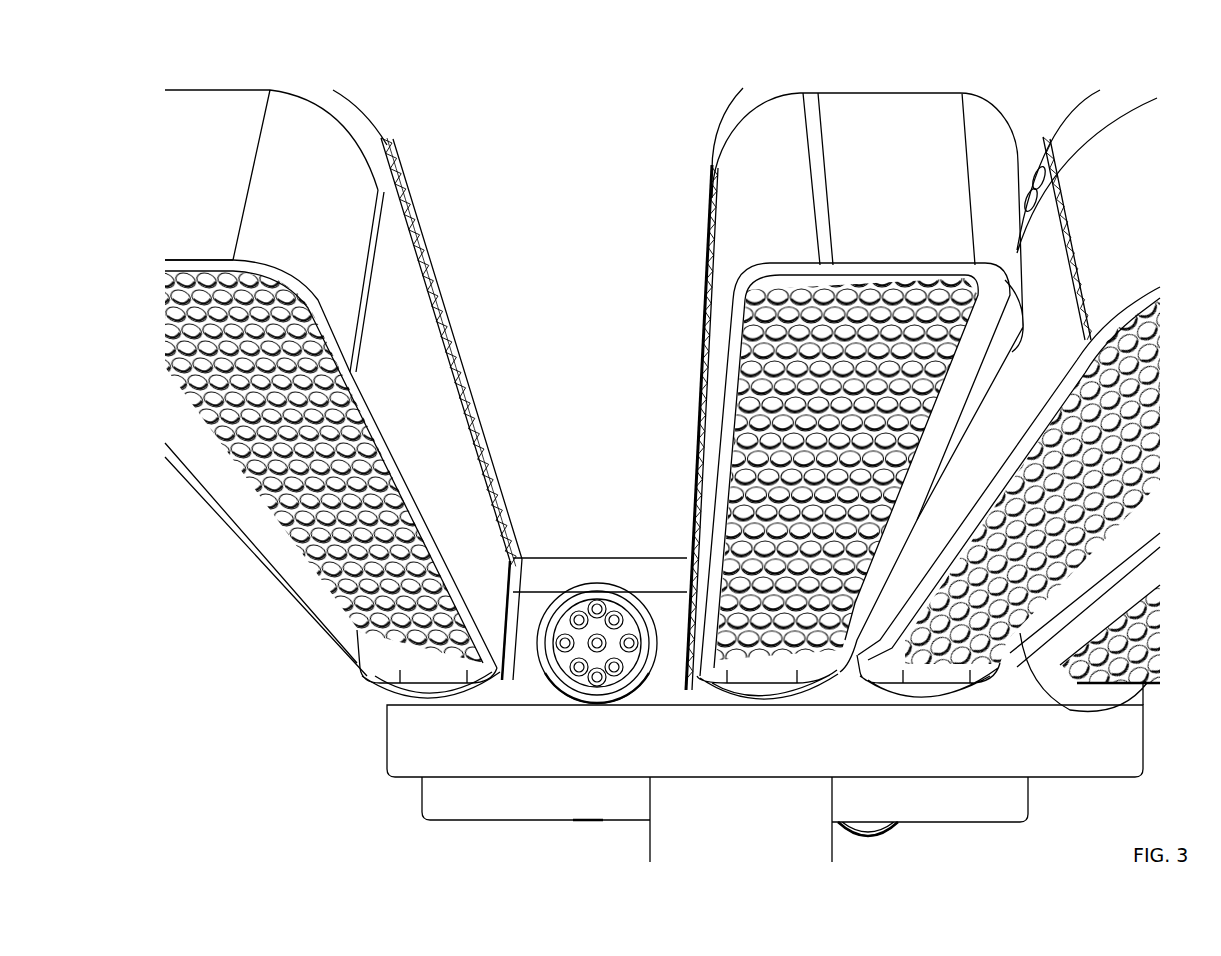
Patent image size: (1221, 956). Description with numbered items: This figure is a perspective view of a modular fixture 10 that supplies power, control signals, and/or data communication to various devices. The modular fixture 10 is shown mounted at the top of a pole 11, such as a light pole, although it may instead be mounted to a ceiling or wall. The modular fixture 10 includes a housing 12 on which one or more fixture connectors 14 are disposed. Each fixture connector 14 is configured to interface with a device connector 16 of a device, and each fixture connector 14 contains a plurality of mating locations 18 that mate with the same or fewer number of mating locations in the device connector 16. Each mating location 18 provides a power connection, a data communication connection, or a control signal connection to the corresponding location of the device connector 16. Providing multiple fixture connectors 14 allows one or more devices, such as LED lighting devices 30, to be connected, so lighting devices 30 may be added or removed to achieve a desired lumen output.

The modular fixture 10 is at (502, 80).
The pole 11 is at (653, 843).
The housing 12 is at (385, 763).
The fixture connector 14 is at (629, 585).
The device connector 16 is at (407, 700).
The mating locations 18 is at (583, 607).
The lighting device 30 is at (413, 231).